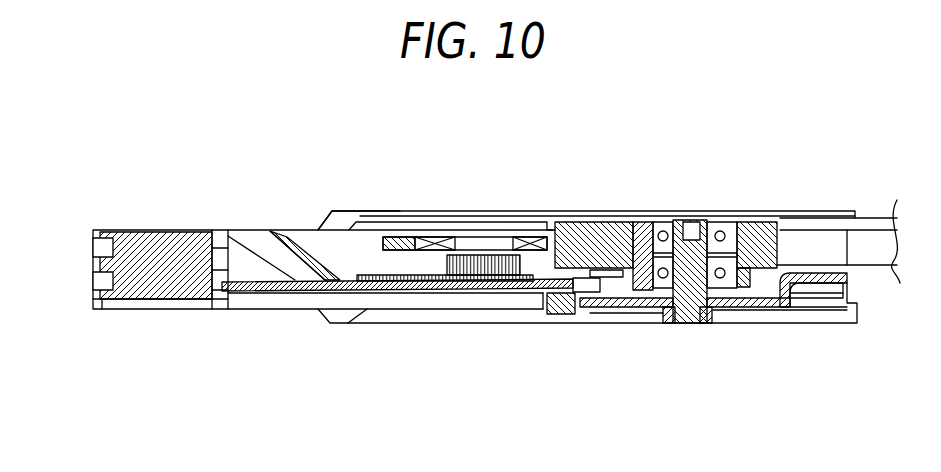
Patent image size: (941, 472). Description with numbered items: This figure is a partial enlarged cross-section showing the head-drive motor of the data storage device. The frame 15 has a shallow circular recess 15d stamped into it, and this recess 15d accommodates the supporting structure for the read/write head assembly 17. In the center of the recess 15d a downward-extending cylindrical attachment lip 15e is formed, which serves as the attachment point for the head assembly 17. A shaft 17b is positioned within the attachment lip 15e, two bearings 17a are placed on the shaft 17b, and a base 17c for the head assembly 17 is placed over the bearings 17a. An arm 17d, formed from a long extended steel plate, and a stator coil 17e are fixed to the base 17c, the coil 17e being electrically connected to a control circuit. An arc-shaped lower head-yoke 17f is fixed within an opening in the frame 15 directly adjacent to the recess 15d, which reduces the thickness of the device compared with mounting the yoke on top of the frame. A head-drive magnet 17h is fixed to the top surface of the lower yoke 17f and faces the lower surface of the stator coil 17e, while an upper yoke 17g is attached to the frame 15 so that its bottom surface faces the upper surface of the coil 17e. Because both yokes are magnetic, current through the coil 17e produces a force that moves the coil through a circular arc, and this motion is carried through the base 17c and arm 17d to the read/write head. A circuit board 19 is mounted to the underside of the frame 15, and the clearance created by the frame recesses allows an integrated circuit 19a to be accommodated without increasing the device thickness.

The read/write head assembly 17 is at (617, 178).
The bearings 17a is at (647, 288).
The shaft 17b is at (689, 323).
The base 17c is at (592, 232).
The arm 17d is at (848, 283).
The stator coil 17e is at (451, 236).
The lower head-yoke 17f is at (368, 300).
The upper yoke 17g is at (373, 228).
The head-drive magnet 17h is at (470, 292).
The circuit board 19 is at (252, 294).
The integrated circuit 19a is at (558, 318).
The frame 15 is at (820, 284).
The recess 15d is at (804, 306).
The attachment lip 15e is at (708, 323).